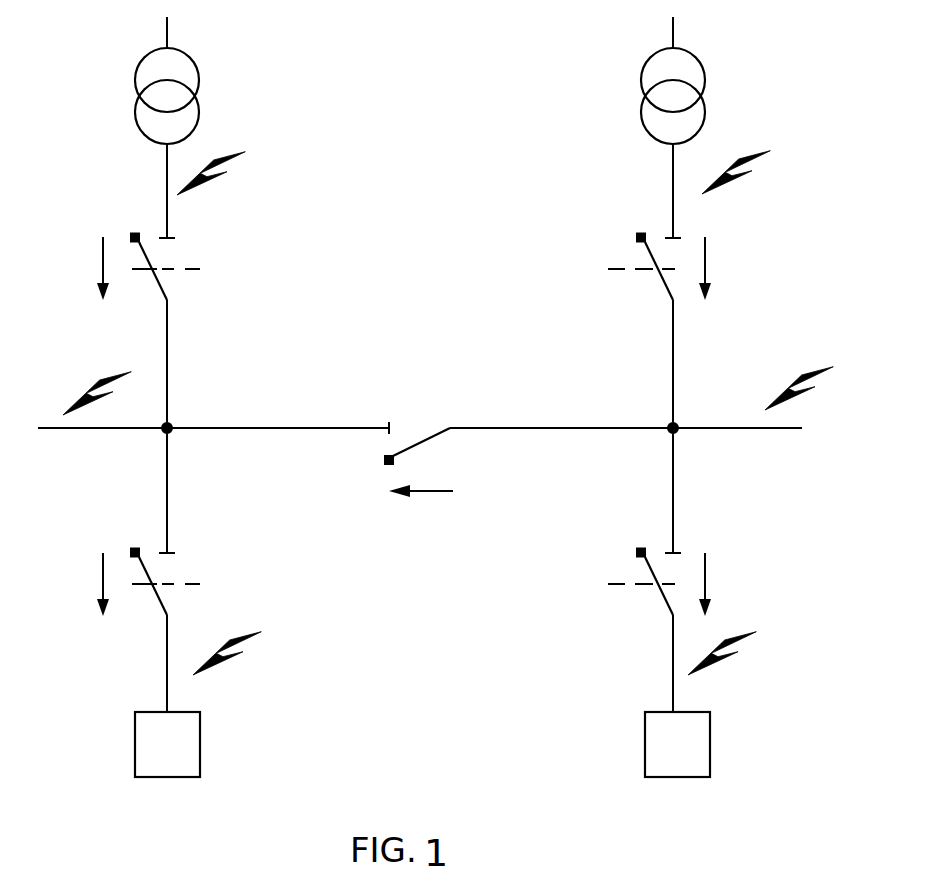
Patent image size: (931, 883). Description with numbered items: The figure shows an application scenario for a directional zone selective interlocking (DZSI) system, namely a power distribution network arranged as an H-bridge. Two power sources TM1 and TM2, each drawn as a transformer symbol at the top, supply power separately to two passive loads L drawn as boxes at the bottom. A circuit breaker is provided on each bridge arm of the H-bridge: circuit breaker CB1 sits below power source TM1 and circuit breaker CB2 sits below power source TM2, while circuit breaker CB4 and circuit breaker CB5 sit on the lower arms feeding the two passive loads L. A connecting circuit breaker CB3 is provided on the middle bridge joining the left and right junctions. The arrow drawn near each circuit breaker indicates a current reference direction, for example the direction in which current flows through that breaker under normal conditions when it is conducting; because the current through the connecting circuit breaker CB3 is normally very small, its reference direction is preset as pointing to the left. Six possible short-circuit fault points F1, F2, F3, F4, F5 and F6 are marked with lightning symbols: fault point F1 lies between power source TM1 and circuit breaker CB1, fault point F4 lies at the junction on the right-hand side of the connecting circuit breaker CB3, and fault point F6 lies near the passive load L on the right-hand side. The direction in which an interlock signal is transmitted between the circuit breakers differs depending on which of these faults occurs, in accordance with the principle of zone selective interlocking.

The power source TM1 is at (209, 80).
The power source TM2 is at (716, 80).
The circuit breaker CB1 is at (146, 245).
The circuit breaker CB2 is at (655, 245).
The connecting circuit breaker CB3 is at (418, 479).
The circuit breaker CB4 is at (146, 563).
The circuit breaker CB5 is at (655, 563).
The fault point F1 is at (237, 173).
The fault point F2 is at (754, 172).
The fault point F3 is at (84, 393).
The fault point F4 is at (818, 388).
The fault point F5 is at (246, 653).
The fault point F6 is at (722, 663).
The passive load L is at (422, 744).